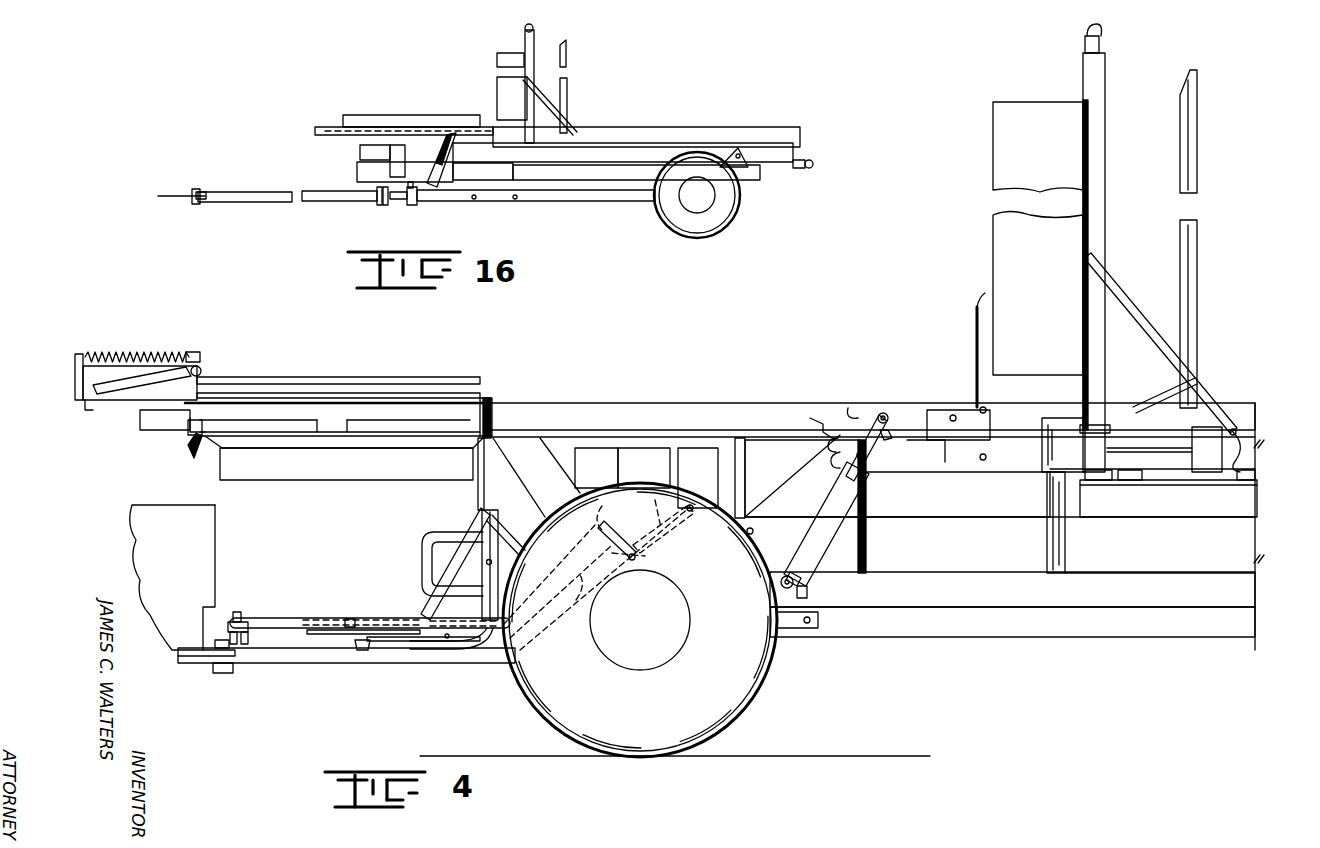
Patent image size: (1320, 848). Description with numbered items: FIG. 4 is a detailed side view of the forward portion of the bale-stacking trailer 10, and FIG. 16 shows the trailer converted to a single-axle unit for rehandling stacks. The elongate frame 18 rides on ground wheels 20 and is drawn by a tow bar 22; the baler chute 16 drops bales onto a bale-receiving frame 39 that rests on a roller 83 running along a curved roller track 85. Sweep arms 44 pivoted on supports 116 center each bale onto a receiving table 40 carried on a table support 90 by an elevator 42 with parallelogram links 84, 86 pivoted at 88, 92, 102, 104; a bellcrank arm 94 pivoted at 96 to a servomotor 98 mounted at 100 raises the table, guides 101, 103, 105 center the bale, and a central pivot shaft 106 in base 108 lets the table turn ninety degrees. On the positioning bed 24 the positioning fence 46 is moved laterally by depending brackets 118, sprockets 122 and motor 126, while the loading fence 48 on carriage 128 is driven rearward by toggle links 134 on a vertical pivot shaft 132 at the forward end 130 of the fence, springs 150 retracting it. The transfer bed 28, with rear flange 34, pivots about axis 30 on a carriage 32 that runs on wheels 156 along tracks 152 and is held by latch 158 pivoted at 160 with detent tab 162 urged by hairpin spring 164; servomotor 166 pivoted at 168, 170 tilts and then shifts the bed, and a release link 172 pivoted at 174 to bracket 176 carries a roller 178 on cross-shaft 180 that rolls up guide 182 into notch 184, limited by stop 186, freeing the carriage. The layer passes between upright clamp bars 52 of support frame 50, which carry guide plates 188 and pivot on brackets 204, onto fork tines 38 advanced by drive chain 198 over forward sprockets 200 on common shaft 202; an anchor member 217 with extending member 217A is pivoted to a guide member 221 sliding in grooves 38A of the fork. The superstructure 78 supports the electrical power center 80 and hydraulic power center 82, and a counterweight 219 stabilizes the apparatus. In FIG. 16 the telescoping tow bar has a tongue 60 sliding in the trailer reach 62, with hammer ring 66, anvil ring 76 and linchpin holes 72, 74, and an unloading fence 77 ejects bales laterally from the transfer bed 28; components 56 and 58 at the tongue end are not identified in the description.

In FIG. 4, the trailer 10 is at (915, 652).
In FIG. 4, the baler chute 16 is at (188, 549).
In FIG. 4, the elongate frame 18 is at (956, 570).
In FIG. 16, the ground wheels 20 is at (741, 210).
In FIG. 4, the ground wheels 20 is at (770, 695).
In FIG. 4, the tow bar 22 is at (325, 668).
In FIG. 4, the positioning bed 24 is at (440, 417).
In FIG. 16, the transfer bed 28 is at (395, 127).
In FIG. 4, the transfer bed 28 is at (580, 403).
In FIG. 4, the horizontal lateral axis 30 is at (986, 408).
In FIG. 4, the carriage means 32 is at (992, 423).
In FIG. 4, the flange 34 is at (975, 323).
In FIG. 16, the tines 38 is at (568, 60).
In FIG. 4, the tines 38 is at (1198, 136).
In FIG. 4, the grooves 38A is at (1198, 259).
In FIG. 4, the bale-receiving frame 39 is at (350, 618).
In FIG. 4, the bale-receiving table 40 is at (312, 618).
In FIG. 4, the elevator 42 is at (482, 648).
In FIG. 4, the sweep arms 44 is at (422, 558).
In FIG. 4, the positioning fence 46 is at (425, 380).
In FIG. 4, the loading fence 48 is at (200, 368).
In FIG. 4, the support frame 50 is at (1116, 80).
In FIG. 4, the upright clamp bars 52 is at (1099, 137).
In FIG. 16, the draw bar 56 is at (170, 193).
In FIG. 16, the tongue section 58 is at (208, 203).
In FIG. 16, the tongue 60 is at (321, 203).
In FIG. 16, the trailer reach 62 is at (580, 200).
In FIG. 4, the trailer reach 62 is at (1095, 637).
In FIG. 16, the hammer ring 66 is at (380, 206).
In FIG. 16, the hole 72 is at (475, 200).
In FIG. 16, the hole 74 is at (516, 200).
In FIG. 16, the anvil ring 76 is at (410, 206).
In FIG. 16, the unloading fence 77 is at (365, 115).
In FIG. 4, the superstructure 78 is at (550, 477).
In FIG. 16, the electrical power center 80 is at (360, 151).
In FIG. 4, the electrical power center 80 is at (603, 475).
In FIG. 16, the hydraulic power center 82 is at (357, 170).
In FIG. 4, the hydraulic power center 82 is at (649, 475).
In FIG. 4, the roller 83 is at (234, 622).
In FIG. 4, the parallelogram links 84 is at (410, 643).
In FIG. 4, the roller track 85 is at (228, 623).
In FIG. 4, the link 86 is at (575, 601).
In FIG. 4, the pivot 88 is at (360, 650).
In FIG. 4, the table support 90 is at (310, 634).
In FIG. 4, the pivot 92 is at (607, 508).
In FIG. 4, the bellcrank arm 94 is at (612, 530).
In FIG. 4, the pivot 96 is at (636, 558).
In FIG. 4, the servomotor 98 is at (668, 541).
In FIG. 4, the pivot 100 is at (692, 511).
In FIG. 4, the guide 101 is at (320, 481).
In FIG. 4, the pivot 102 is at (447, 640).
In FIG. 4, the guide 103 is at (478, 494).
In FIG. 4, the pivot 104 is at (644, 507).
In FIG. 4, the guide 105 is at (190, 451).
In FIG. 4, the central pivot shaft 106 is at (374, 619).
In FIG. 4, the base 108 is at (342, 619).
In FIG. 4, the supports 116 is at (490, 516).
In FIG. 4, the depending brackets 118 is at (190, 420).
In FIG. 4, the sprockets 122 is at (490, 380).
In FIG. 4, the motor 126 is at (188, 420).
In FIG. 4, the carriage 128 is at (190, 390).
In FIG. 4, the extreme forward end 130 is at (90, 410).
In FIG. 4, the vertical pivot shaft 132 is at (76, 392).
In FIG. 4, the first pair of toggle links 134 is at (90, 374).
In FIG. 4, the springs 150 is at (140, 353).
In FIG. 4, the tracks 152 is at (946, 463).
In FIG. 4, the wheels 156 is at (812, 423).
In FIG. 4, the latch means 158 is at (880, 455).
In FIG. 4, the pivot 160 is at (980, 457).
In FIG. 4, the detent tab 162 is at (832, 447).
In FIG. 4, the hairpin spring 164 is at (925, 454).
In FIG. 4, the servomotor 166 is at (788, 498).
In FIG. 4, the pivot 168 is at (753, 531).
In FIG. 4, the pivot 170 is at (954, 415).
In FIG. 4, the release link 172 is at (852, 495).
In FIG. 4, the pivot 174 is at (883, 412).
In FIG. 4, the bracket 176 is at (856, 414).
In FIG. 4, the roller 178 is at (805, 591).
In FIG. 4, the cross-shaft 180 is at (781, 583).
In FIG. 4, the guide 182 is at (866, 529).
In FIG. 4, the notch 184 is at (830, 464).
In FIG. 4, the stop 186 is at (884, 430).
In FIG. 16, the guide plates 188 is at (498, 58).
In FIG. 4, the guide plates 188 is at (1058, 289).
In FIG. 4, the drive chain 198 is at (1080, 484).
In FIG. 4, the forward sprockets 200 is at (1065, 506).
In FIG. 4, the common shaft 202 is at (1056, 458).
In FIG. 4, the brackets 204 is at (1192, 452).
In FIG. 16, the anchor member 217 is at (566, 96).
In FIG. 4, the anchor member 217 is at (1145, 399).
In FIG. 4, the extending member 217A is at (1172, 350).
In FIG. 16, the counterweight 219 is at (400, 146).
In FIG. 4, the counterweight 219 is at (738, 440).
In FIG. 4, the guide member 221 is at (1168, 403).